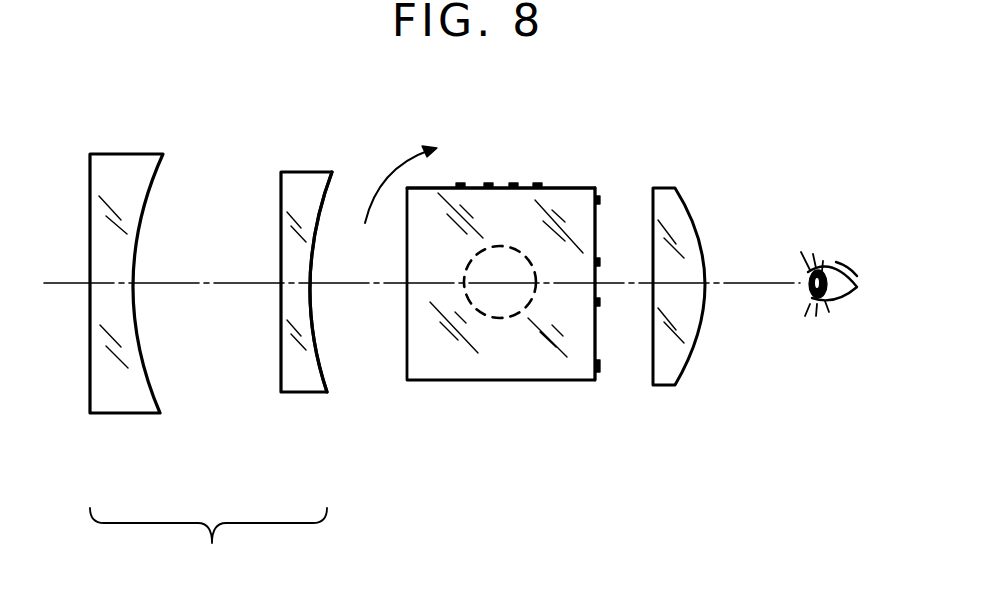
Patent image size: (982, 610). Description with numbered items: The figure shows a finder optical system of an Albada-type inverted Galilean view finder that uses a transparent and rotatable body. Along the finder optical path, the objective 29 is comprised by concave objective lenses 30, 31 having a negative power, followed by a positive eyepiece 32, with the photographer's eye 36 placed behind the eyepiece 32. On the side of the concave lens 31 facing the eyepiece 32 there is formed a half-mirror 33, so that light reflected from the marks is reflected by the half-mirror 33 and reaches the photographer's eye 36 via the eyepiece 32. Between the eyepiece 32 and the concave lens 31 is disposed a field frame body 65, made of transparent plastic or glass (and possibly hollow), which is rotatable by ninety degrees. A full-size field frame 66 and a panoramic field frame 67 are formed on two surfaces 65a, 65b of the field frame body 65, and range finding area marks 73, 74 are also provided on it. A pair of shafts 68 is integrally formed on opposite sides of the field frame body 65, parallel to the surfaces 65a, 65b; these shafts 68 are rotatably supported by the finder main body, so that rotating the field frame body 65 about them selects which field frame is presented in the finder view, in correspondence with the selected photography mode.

The objective 29 is at (208, 545).
The concave objective lens 30 is at (118, 416).
The concave objective lens 31 is at (298, 395).
The eyepiece 32 is at (686, 362).
The half-mirror 33 is at (315, 322).
The photographer's eye 36 is at (838, 298).
The field frame body 65 is at (458, 382).
The surface of field frame body 65a is at (598, 229).
The surface of field frame body 65b is at (570, 187).
The full-size field frame 66 is at (598, 378).
The panoramic field frame 67 is at (461, 183).
The shaft 68 is at (505, 318).
The range finding area mark 73 is at (599, 304).
The range finding area mark 74 is at (516, 183).